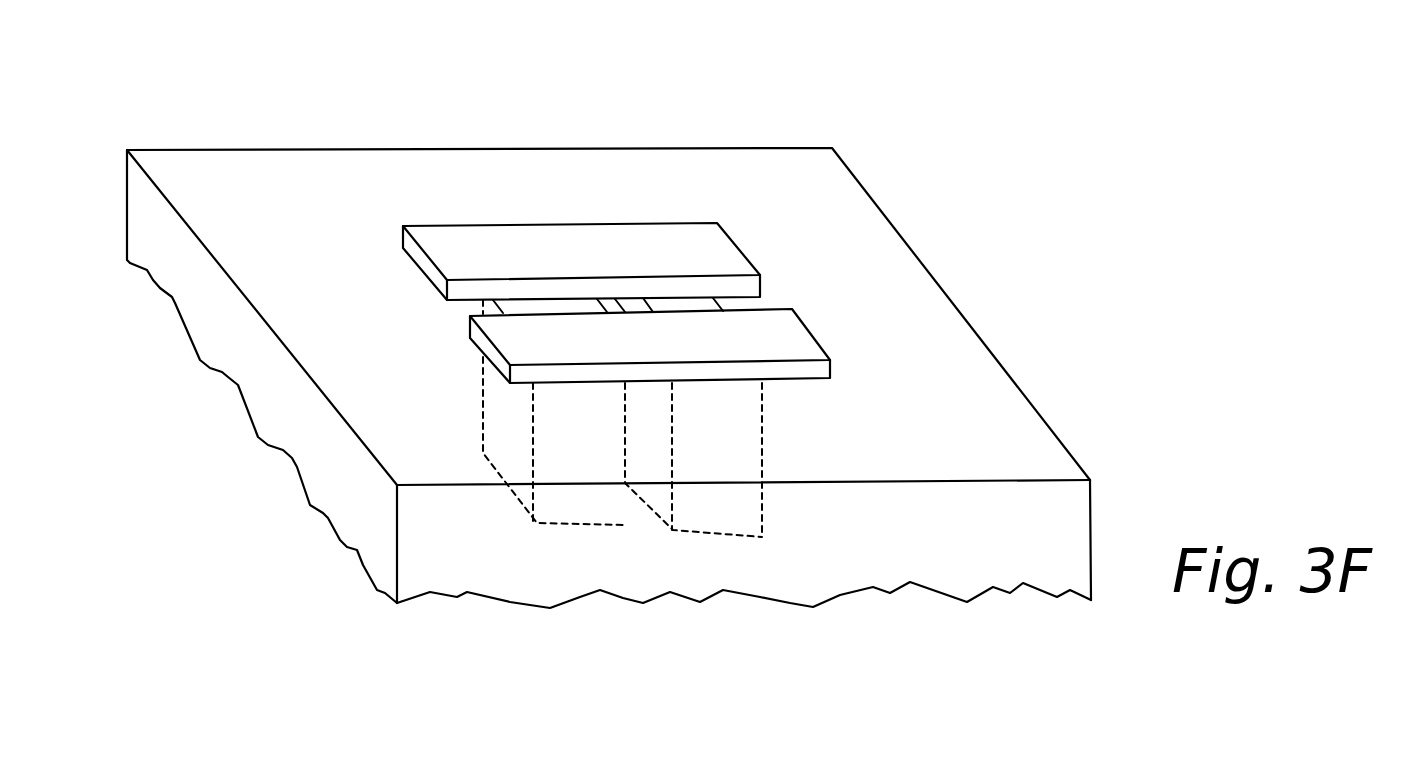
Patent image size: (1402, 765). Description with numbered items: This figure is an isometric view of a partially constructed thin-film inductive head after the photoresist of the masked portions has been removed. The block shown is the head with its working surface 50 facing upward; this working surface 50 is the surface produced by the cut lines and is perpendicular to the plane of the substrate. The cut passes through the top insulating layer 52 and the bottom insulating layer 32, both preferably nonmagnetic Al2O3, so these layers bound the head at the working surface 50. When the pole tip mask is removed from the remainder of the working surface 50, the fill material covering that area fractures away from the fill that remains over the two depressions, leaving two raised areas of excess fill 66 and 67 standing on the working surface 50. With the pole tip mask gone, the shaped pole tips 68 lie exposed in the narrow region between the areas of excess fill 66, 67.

The working surface 50 is at (1037, 457).
The top insulating layer 52 is at (218, 167).
The bottom insulating layer 32 is at (914, 332).
The excess fill 66 is at (588, 242).
The excess fill 67 is at (784, 334).
The shaped pole tips 68 is at (520, 295).